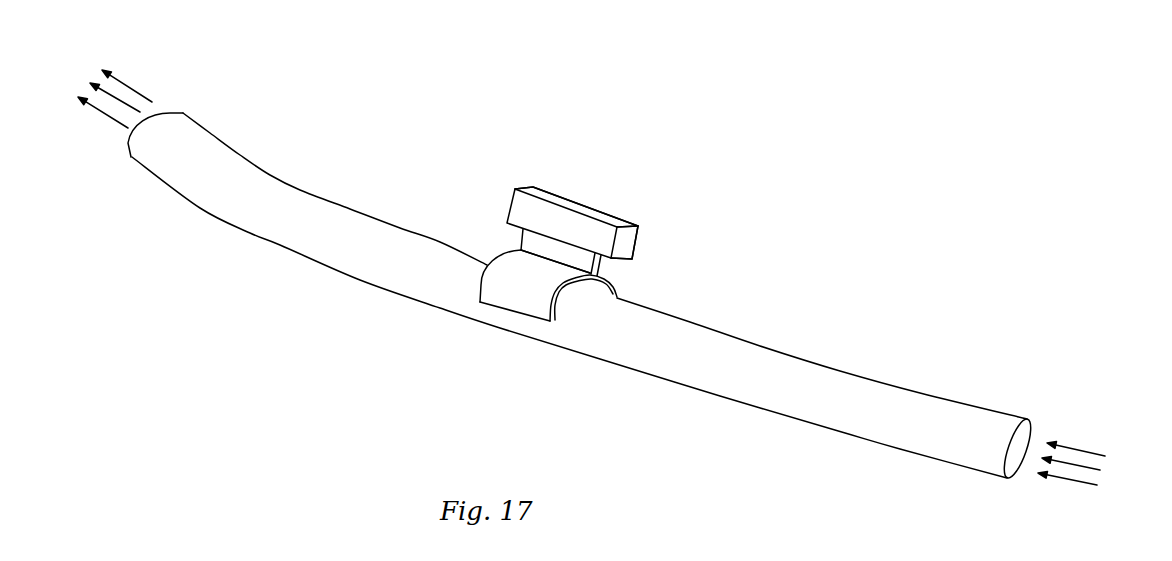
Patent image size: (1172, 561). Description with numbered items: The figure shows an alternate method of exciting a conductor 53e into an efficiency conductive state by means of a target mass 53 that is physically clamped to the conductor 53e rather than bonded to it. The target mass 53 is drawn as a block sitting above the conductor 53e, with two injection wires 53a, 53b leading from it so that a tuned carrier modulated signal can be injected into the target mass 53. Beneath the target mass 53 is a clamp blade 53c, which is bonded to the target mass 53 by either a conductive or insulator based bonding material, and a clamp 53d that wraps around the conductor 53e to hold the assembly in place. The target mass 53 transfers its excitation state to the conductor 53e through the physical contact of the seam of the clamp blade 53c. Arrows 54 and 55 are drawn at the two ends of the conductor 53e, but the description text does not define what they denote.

The target mass 53 is at (583, 198).
The injection wire 53a is at (515, 189).
The injection wire 53b is at (632, 259).
The clamp blade 53c is at (523, 231).
The clamp 53d is at (480, 281).
The conductor 53e is at (807, 358).
The inflow arrows 54 is at (1107, 485).
The outflow arrows 55 is at (103, 58).